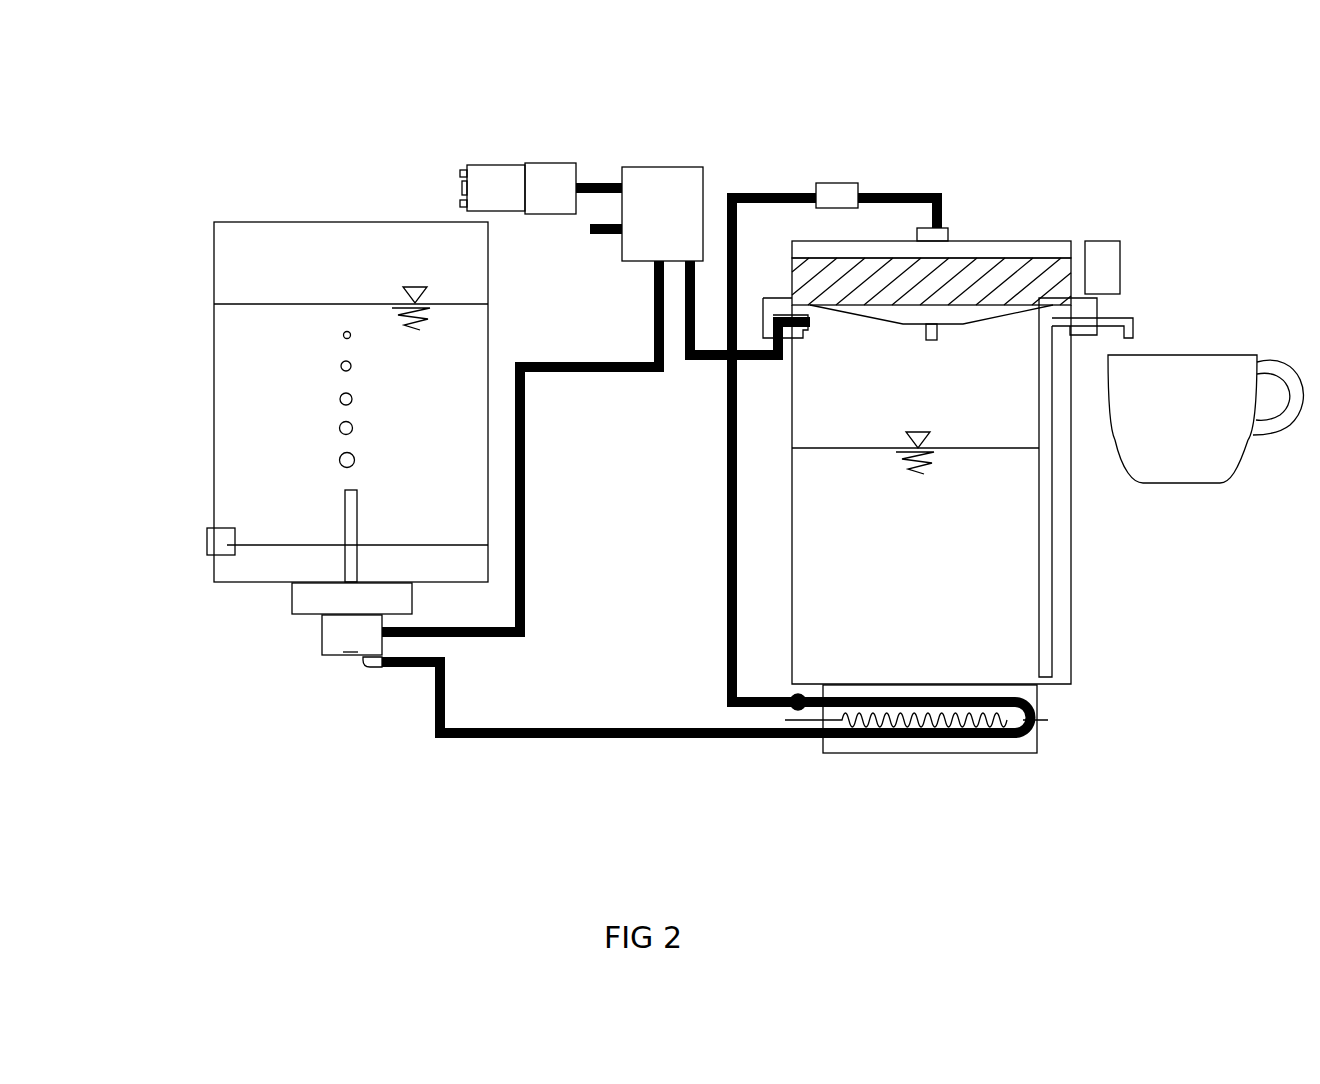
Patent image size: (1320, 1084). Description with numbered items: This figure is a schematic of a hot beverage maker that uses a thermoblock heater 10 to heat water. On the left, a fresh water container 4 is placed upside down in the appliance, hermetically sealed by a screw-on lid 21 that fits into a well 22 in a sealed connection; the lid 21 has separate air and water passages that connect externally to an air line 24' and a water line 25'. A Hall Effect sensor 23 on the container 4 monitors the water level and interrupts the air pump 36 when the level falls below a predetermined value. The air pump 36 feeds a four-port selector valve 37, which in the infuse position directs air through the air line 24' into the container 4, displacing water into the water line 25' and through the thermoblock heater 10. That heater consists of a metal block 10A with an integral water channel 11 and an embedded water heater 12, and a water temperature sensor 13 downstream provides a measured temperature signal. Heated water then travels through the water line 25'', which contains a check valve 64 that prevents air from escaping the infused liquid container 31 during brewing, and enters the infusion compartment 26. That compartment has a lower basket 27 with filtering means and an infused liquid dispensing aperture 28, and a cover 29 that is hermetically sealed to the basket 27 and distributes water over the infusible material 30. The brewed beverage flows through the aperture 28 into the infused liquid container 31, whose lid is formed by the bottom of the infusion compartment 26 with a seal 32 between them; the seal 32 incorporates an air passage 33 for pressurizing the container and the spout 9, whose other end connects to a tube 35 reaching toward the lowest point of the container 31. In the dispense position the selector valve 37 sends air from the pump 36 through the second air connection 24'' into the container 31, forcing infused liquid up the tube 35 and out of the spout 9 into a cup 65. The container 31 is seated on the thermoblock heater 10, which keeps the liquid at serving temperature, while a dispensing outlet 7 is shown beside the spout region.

The fresh water container 4 is at (336, 260).
The dispensing outlet 7 is at (1105, 270).
The spout 9 is at (1130, 322).
The thermoblock heater 10 is at (955, 750).
The metal block 10A is at (994, 755).
The water channel 11 is at (1020, 737).
The embedded water heater 12 is at (1005, 712).
The water temperature sensor 13 is at (802, 710).
The screw-on lid 21 is at (302, 601).
The well 22 is at (338, 631).
The Hall Effect sensor 23 is at (210, 537).
The air line 24' is at (520, 446).
The second water duct 24'' is at (749, 331).
The water line 25' is at (698, 724).
The water line 25'' is at (834, 450).
The infusion compartment 26 is at (889, 264).
The basket 27 is at (792, 268).
The infused liquid dispensing aperture 28 is at (927, 338).
The cover 29 is at (963, 254).
The infusible material 30 is at (992, 272).
The infused liquid container 31 is at (1008, 573).
The seal 32 is at (770, 308).
The air passage 33 is at (786, 316).
The tube 35 is at (1047, 616).
The air pump 36 is at (548, 177).
The selector valve 37 is at (662, 183).
The check valve 64 is at (838, 190).
The cup 65 is at (1190, 394).